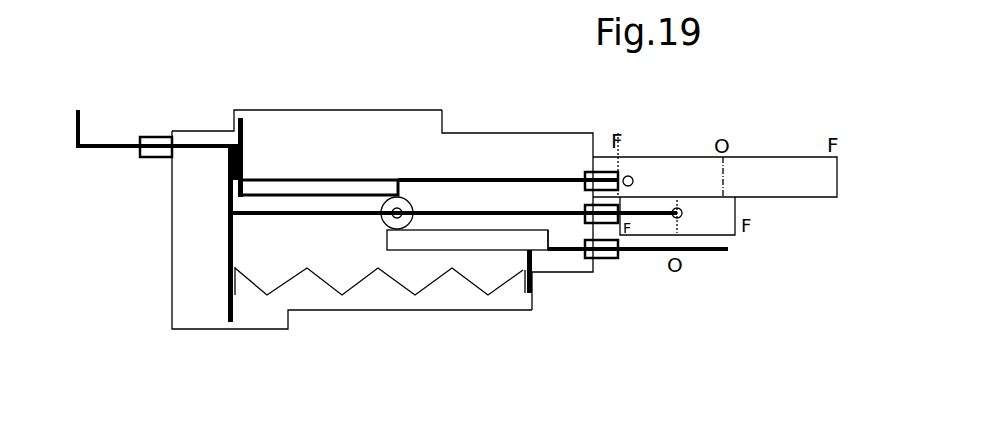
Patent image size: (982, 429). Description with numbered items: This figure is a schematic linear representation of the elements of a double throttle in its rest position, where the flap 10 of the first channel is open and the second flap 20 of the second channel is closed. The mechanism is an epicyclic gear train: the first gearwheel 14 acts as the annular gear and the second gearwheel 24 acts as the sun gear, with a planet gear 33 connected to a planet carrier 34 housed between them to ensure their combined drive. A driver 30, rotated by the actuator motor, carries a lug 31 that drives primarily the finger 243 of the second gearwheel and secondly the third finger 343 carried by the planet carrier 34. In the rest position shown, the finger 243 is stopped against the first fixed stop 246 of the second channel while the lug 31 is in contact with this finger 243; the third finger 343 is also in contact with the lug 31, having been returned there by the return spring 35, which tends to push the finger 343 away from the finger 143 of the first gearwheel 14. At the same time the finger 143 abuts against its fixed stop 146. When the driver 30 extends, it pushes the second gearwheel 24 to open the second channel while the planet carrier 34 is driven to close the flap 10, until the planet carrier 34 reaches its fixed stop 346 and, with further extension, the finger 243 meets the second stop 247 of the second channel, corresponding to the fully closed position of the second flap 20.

The flap of the first channel 10 is at (687, 216).
The first gearwheel 14 is at (503, 238).
The second flap 20 is at (633, 181).
The second gearwheel 24 is at (298, 178).
The driver 30 is at (101, 142).
The lug 31 is at (228, 153).
The planet gear 33 is at (410, 198).
The planet carrier 34 is at (287, 217).
The return spring 35 is at (466, 280).
The finger of the first gearwheel 143 is at (533, 260).
The fixed stop of the first gearwheel finger 146 is at (533, 286).
The finger of the second gearwheel 243 is at (244, 138).
The first fixed stop of the second channel 246 is at (237, 120).
The second stop of the second channel 247 is at (444, 122).
The third finger 343 is at (228, 172).
The fixed stop of the planet carrier 346 is at (288, 318).